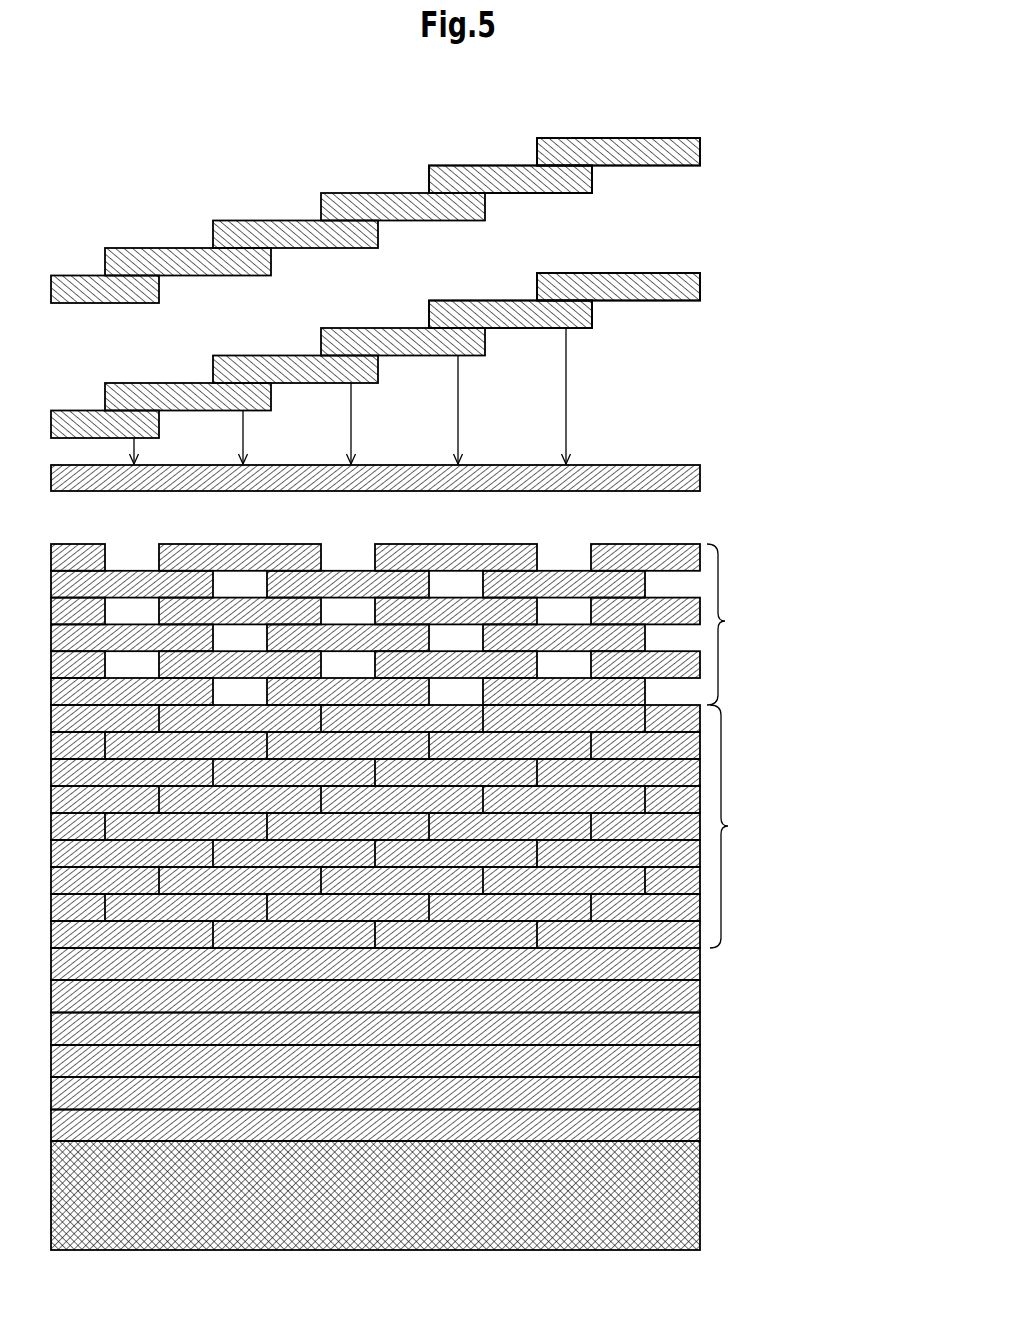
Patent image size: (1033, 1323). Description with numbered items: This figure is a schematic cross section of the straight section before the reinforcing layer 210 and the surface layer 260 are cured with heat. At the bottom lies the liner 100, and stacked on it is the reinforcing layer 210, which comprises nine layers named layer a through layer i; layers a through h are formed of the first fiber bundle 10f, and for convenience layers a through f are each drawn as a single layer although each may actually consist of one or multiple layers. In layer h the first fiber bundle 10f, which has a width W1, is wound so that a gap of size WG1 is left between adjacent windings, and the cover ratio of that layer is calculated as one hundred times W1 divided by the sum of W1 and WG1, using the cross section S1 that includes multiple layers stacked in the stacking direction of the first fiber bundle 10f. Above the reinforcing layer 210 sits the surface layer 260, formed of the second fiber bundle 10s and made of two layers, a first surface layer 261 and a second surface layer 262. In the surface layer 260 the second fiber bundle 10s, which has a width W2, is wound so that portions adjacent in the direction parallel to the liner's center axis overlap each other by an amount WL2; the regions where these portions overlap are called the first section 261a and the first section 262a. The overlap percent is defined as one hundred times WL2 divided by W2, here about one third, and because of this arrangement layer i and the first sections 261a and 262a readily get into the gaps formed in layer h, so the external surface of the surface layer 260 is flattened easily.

The surface layer 260 is at (443, 299).
The second surface layer 262 is at (704, 130).
The first surface layer 261 is at (411, 355).
The second fiber bundle 10s is at (628, 130).
The first section 262a is at (516, 128).
The first section 261a is at (588, 328).
The width of the second fiber bundle W2 is at (529, 130).
The overlap between adjacent portions of the second fiber bundle WL2 is at (584, 130).
The reinforcing layer 210 is at (456, 801).
The first fiber bundle 10f is at (133, 562).
The width of the first fiber bundle W1 is at (153, 553).
The gap in the first fiber bundle WG1 is at (313, 553).
The cross section S1 is at (462, 587).
The liner 100 is at (699, 1133).